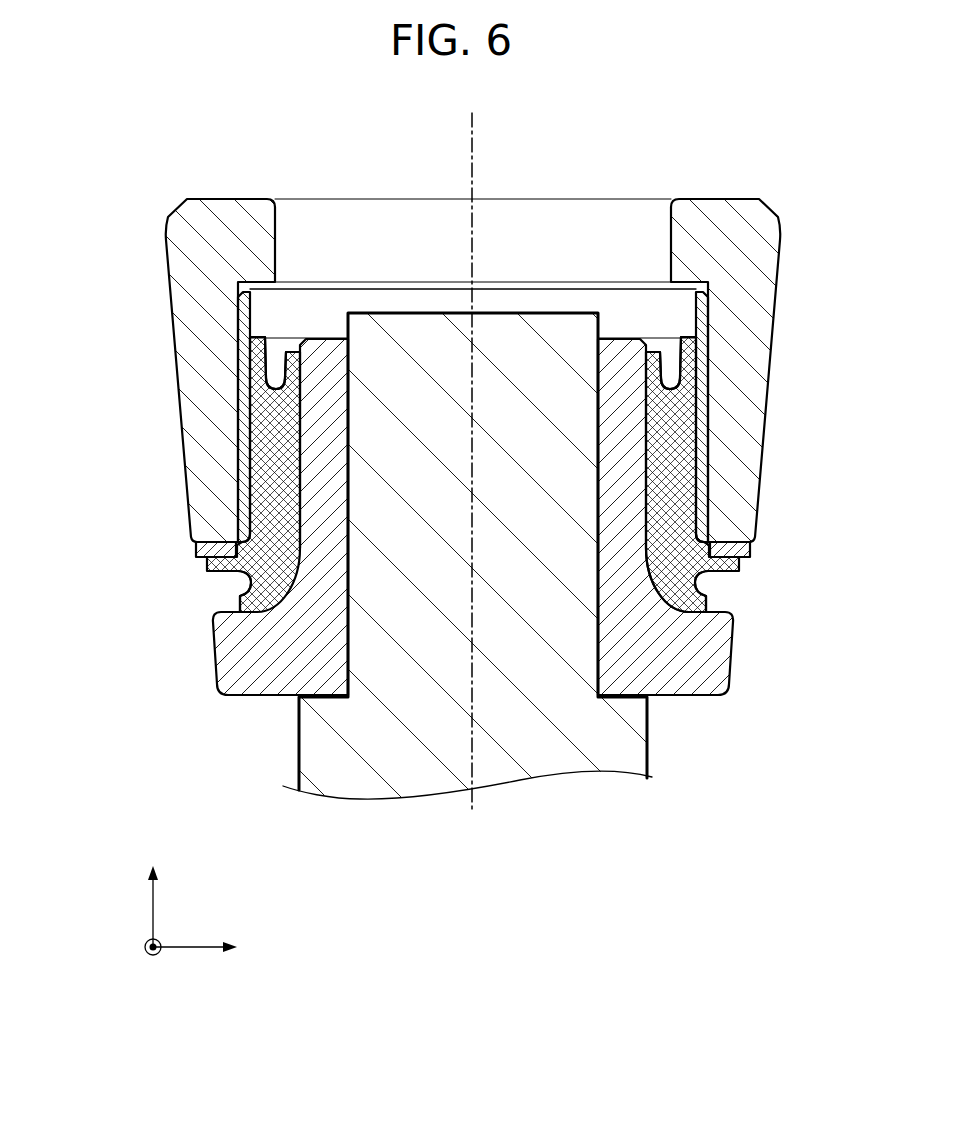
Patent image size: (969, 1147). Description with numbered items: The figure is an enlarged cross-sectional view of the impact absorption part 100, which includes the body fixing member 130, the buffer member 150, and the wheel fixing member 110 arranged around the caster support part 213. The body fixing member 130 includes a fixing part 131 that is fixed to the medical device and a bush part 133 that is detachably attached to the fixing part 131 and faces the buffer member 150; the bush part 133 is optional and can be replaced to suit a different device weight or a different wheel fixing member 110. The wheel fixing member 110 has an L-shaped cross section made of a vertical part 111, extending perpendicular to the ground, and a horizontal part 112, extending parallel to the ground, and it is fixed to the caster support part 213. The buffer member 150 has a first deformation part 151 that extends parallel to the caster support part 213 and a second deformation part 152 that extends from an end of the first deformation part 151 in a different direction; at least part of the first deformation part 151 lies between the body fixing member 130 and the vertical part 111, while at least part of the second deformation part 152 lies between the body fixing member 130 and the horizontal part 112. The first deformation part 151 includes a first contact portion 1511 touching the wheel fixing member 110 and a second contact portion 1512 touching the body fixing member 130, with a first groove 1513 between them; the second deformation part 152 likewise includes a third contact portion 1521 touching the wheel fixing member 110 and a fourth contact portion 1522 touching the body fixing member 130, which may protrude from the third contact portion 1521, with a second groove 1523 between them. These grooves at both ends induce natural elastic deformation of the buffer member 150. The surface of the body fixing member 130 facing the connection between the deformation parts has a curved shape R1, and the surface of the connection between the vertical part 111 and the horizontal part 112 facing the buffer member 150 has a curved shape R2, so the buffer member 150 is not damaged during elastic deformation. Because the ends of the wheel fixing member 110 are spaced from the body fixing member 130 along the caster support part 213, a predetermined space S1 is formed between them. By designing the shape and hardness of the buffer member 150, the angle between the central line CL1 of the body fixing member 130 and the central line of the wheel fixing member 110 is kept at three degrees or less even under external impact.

The impact absorption part 100 is at (148, 201).
The wheel fixing member 110 is at (418, 529).
The vertical part 111 is at (326, 527).
The horizontal part 112 is at (245, 648).
The body fixing member 130 is at (443, 370).
The fixing part 131 is at (212, 398).
The bush part 133 is at (245, 460).
The buffer member 150 is at (462, 464).
The first deformation part 151 is at (487, 462).
The first contact portion 1511 is at (650, 369).
The second contact portion 1512 is at (693, 337).
The first groove 1513 is at (680, 372).
The second deformation part 152 is at (479, 577).
The third contact portion 1521 is at (700, 606).
The fourth contact portion 1522 is at (740, 560).
The second groove 1523 is at (700, 580).
The caster support part 213 is at (545, 652).
The space S1 is at (523, 304).
The curved shape R1 is at (697, 541).
The curved shape R2 is at (653, 588).
The central line of the body fixing member CL1 is at (472, 158).